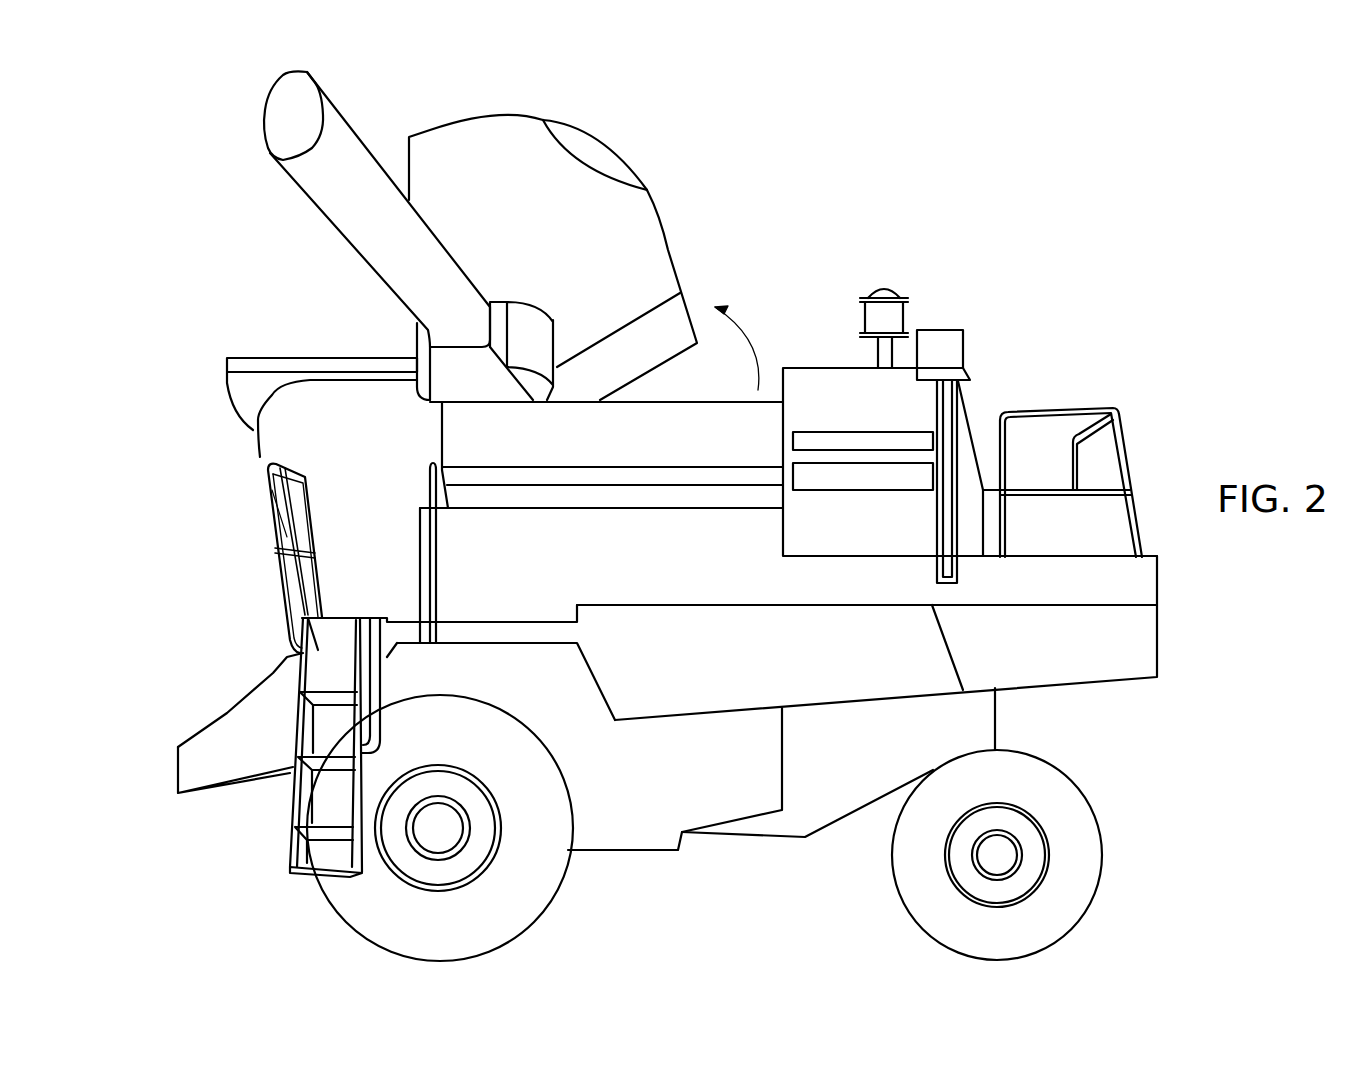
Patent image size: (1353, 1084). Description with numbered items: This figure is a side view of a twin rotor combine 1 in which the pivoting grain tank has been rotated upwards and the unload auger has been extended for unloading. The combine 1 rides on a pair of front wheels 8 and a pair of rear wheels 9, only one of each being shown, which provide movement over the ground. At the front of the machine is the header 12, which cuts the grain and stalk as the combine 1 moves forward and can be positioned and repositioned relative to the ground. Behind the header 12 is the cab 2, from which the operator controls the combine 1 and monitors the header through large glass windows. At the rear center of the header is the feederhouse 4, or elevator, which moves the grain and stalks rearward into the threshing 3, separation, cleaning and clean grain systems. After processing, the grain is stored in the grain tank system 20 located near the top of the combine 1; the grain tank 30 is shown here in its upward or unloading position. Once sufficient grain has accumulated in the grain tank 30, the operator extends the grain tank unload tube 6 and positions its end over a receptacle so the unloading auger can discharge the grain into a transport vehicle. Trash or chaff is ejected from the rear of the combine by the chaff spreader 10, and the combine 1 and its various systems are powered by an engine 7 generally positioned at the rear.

The combine 1 is at (1072, 213).
The cab 2 is at (277, 455).
The threshing system 3 is at (583, 733).
The feederhouse 4 is at (257, 715).
The grain tank unload tube 6 is at (457, 378).
The engine 7 is at (893, 415).
The front wheels 8 is at (320, 893).
The rear wheels 9 is at (1103, 843).
The chaff spreader 10 is at (1073, 685).
The header 12 is at (163, 930).
The grain tank system 20 is at (670, 175).
The grain tank 30 is at (650, 267).